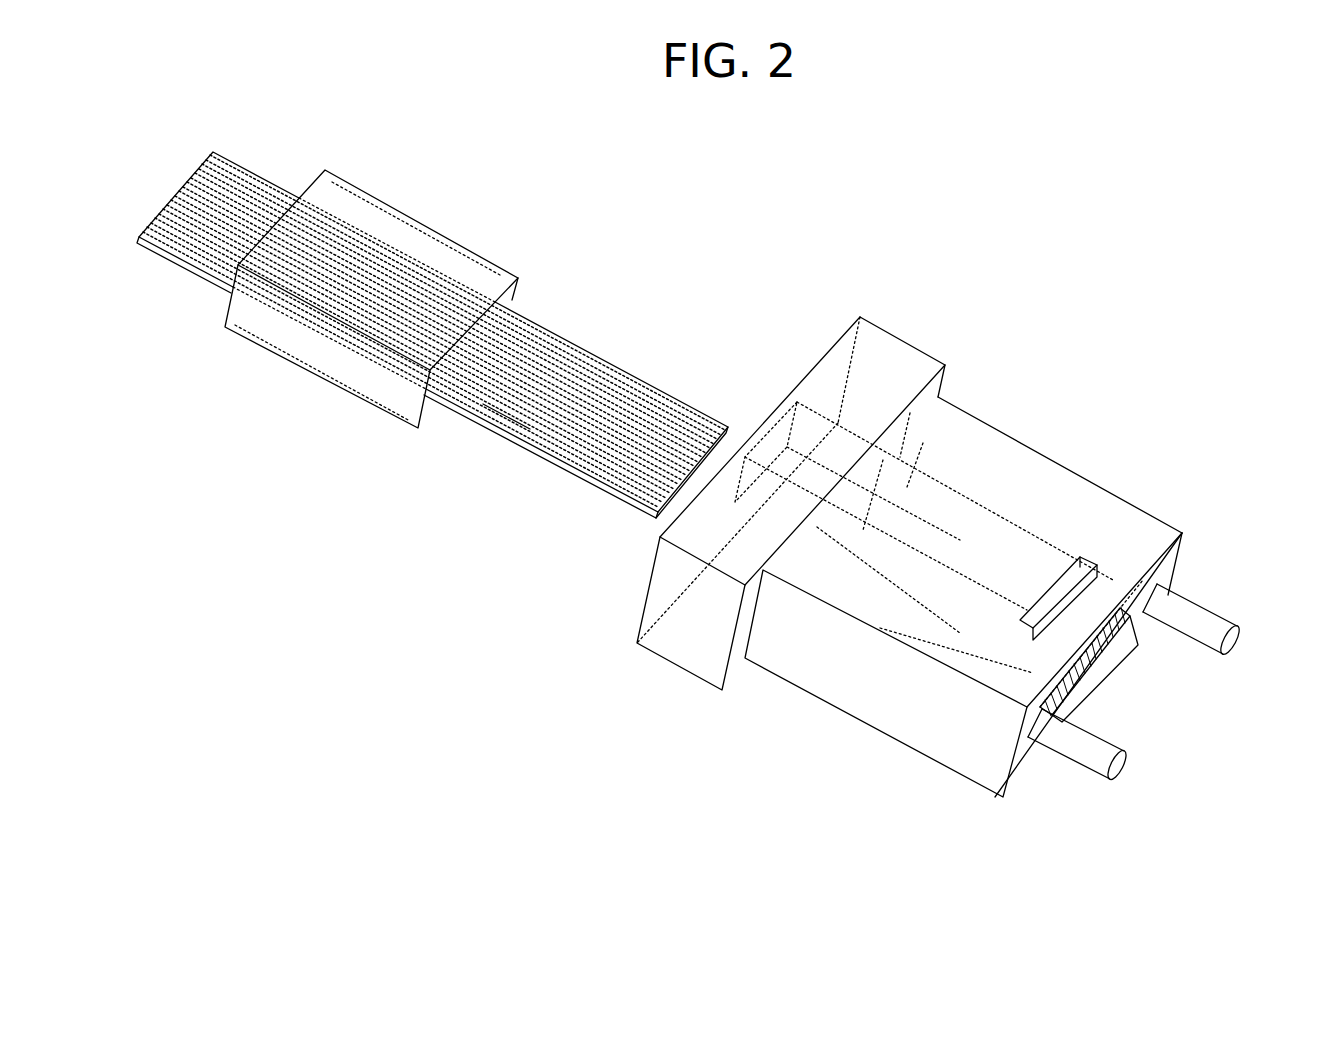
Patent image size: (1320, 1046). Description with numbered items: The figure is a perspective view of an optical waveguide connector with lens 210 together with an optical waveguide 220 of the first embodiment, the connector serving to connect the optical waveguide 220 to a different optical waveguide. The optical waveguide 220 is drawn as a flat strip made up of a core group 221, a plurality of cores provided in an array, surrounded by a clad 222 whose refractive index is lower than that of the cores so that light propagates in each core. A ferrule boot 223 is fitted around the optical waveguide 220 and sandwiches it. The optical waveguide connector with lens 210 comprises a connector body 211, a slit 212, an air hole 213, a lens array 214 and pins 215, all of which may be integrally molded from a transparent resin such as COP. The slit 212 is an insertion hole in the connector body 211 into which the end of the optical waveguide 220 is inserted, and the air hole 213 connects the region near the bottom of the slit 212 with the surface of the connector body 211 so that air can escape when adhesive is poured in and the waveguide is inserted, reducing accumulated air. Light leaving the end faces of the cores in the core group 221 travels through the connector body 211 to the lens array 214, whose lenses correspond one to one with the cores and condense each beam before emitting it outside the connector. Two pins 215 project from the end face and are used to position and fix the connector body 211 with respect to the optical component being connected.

The optical waveguide connector with lens 210 is at (940, 582).
The connector body 211 is at (982, 448).
The slit 212 is at (862, 604).
The air hole 213 is at (1047, 593).
The lens array 214 is at (1124, 612).
The pins 215 is at (1207, 627).
The optical waveguide 220 is at (245, 170).
The core group 221 is at (528, 404).
The clad 222 is at (605, 487).
The ferrule boot 223 is at (410, 238).